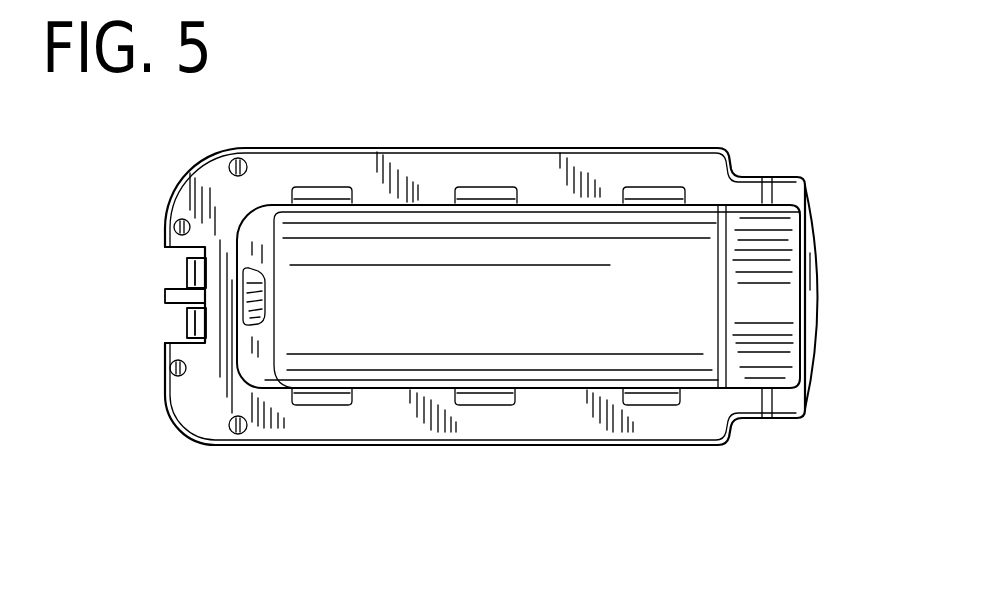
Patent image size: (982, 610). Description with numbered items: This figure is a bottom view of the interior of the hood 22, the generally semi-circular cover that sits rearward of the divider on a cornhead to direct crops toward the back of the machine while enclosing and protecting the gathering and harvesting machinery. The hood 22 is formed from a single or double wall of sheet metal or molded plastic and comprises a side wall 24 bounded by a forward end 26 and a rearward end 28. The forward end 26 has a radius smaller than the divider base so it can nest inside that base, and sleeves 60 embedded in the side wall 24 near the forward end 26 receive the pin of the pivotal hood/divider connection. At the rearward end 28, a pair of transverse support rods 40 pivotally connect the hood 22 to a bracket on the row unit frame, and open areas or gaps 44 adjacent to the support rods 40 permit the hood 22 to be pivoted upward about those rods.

The hood 22 is at (145, 172).
The side wall 24 is at (510, 430).
The forward end 26 is at (817, 276).
The rearward end 28 is at (177, 397).
The transverse support rods 40 is at (188, 263).
The gaps 44 is at (170, 280).
The sleeves 60 is at (765, 193).